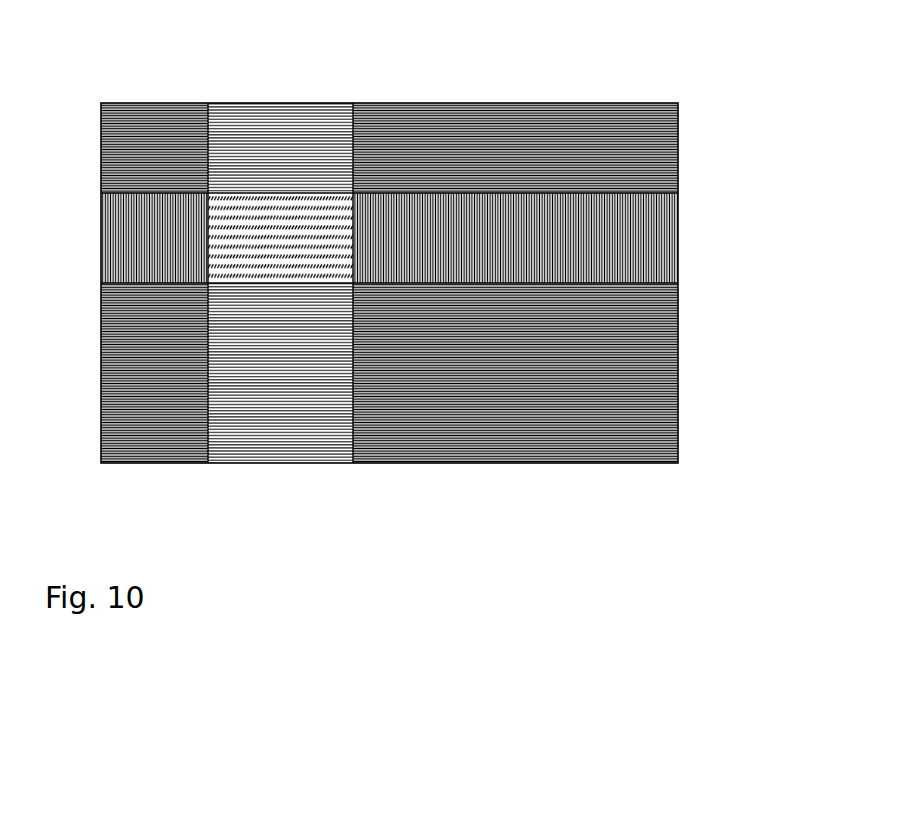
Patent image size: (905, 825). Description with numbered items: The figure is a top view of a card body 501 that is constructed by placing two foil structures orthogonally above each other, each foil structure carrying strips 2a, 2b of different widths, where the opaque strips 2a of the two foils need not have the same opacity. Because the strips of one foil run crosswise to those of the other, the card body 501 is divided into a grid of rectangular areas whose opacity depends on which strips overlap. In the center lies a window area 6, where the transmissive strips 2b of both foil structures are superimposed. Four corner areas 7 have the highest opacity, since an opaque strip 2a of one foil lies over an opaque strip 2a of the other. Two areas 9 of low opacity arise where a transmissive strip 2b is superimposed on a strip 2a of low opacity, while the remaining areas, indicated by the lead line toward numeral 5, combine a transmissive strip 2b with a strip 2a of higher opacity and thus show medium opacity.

The opaque strip 2a is at (415, 268).
The transmissive strip 2b is at (415, 178).
The second-region stripe portion 5 is at (660, 247).
The window area 6 is at (280, 247).
The area with highest opacity 7 is at (460, 425).
The area of low opacity 9 is at (280, 425).
The card body 501 is at (679, 536).